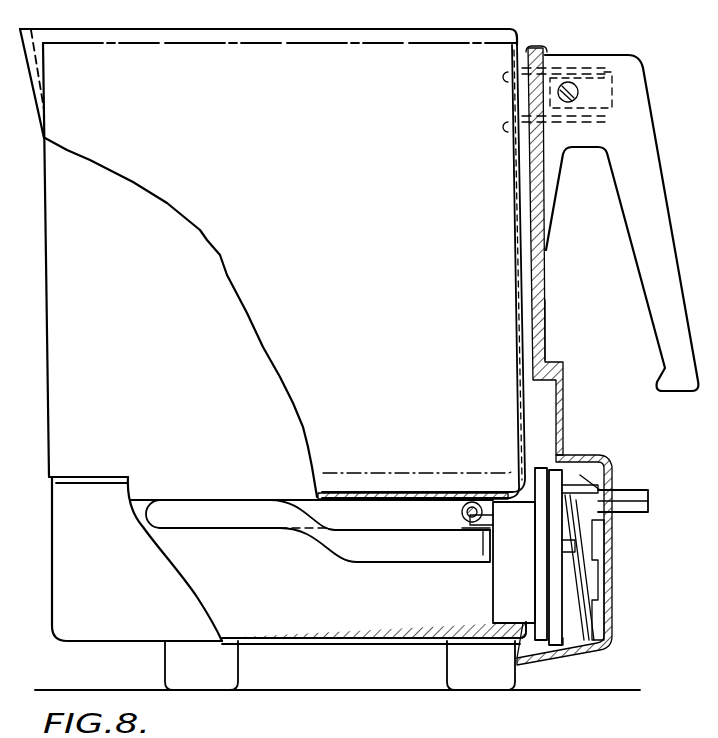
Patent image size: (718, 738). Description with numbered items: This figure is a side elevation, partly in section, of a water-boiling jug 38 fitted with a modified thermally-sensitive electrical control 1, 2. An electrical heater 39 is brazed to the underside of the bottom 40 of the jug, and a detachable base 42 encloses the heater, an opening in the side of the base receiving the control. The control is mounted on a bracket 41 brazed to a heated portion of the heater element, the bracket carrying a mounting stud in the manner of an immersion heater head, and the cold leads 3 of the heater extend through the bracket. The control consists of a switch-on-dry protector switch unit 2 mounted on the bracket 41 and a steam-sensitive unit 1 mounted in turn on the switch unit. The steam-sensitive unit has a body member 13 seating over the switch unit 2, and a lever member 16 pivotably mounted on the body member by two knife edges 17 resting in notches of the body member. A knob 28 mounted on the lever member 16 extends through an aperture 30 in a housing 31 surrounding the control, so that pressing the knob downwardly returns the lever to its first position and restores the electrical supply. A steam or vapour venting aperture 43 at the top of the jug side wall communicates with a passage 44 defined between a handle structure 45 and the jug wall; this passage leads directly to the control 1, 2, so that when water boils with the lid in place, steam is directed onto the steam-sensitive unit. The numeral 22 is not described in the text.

The steam-sensitive unit 1 is at (556, 573).
The switch-on-dry protector switch unit 2 is at (507, 587).
The cold leads 3 is at (490, 545).
The body member 13 is at (560, 634).
The lever member 16 is at (580, 562).
The knife edges 17 is at (496, 731).
The bimetal 22 is at (545, 721).
The knob 28 is at (645, 499).
The aperture 30 is at (617, 490).
The housing 31 is at (586, 462).
The jug 38 is at (46, 452).
The electrical heater 39 is at (230, 530).
The bottom 40 is at (345, 497).
The bracket 41 is at (525, 588).
The detachable base 42 is at (88, 598).
The steam or vapour venting aperture 43 is at (511, 66).
The passage 44 is at (534, 295).
The handle structure 45 is at (550, 338).